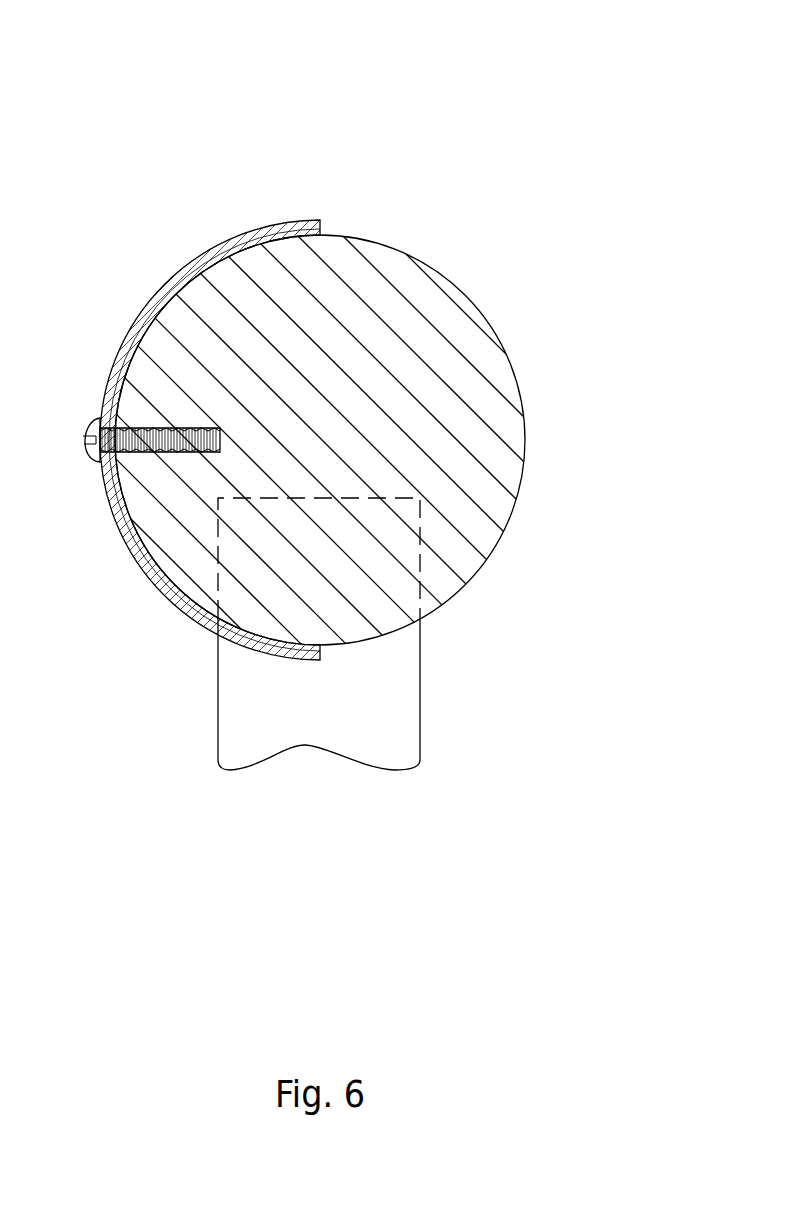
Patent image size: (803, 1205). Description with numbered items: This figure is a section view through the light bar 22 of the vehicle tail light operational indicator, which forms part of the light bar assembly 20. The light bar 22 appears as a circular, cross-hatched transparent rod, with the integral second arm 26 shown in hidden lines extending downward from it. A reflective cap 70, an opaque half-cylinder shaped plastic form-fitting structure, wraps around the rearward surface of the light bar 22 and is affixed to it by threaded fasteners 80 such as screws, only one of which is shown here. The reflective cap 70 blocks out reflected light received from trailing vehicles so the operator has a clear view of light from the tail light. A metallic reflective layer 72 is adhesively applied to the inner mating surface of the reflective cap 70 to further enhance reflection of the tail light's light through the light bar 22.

The light bar assembly 20 is at (523, 110).
The light bar 22 is at (452, 283).
The second arm 26 is at (404, 680).
The reflective cap 70 is at (145, 577).
The metallic reflective layer 72 is at (217, 265).
The threaded fasteners 80 is at (117, 445).